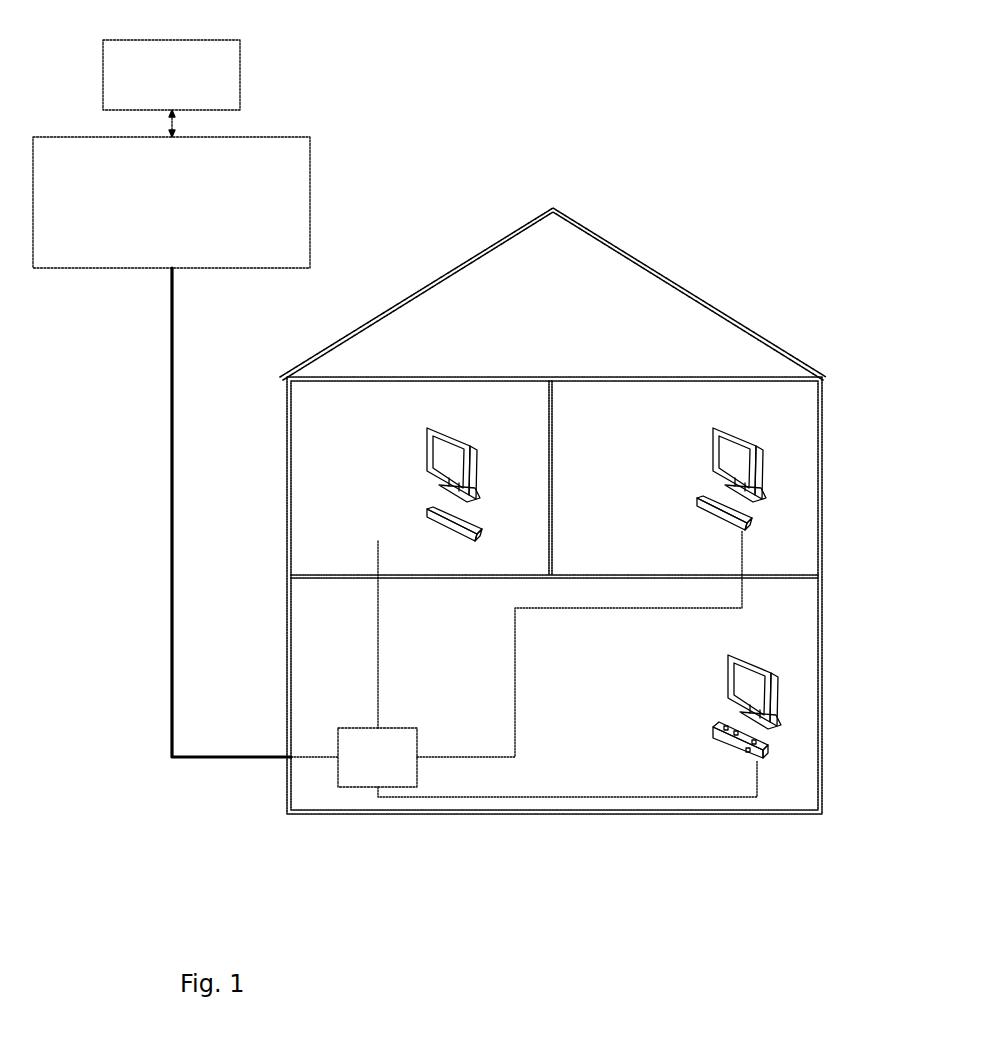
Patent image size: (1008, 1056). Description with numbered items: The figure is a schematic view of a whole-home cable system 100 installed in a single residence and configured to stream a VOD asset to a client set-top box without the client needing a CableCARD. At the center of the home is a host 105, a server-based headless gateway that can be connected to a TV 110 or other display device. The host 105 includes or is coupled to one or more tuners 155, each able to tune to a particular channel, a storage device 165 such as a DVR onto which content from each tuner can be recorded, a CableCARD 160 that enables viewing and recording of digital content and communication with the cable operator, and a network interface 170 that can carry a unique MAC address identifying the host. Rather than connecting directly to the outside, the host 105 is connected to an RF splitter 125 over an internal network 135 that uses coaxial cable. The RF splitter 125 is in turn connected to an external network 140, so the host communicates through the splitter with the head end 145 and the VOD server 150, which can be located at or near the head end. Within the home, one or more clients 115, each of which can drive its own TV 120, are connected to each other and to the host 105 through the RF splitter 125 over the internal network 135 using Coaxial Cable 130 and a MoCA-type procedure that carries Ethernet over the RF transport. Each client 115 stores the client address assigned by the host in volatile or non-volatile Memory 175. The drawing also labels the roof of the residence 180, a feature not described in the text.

The cable system 100 is at (393, 941).
The host 105 is at (760, 760).
The TV 110 is at (780, 685).
The client 115 is at (479, 525).
The TV 120 is at (447, 435).
The RF splitter 125 is at (357, 773).
The Coaxial Cable 130 is at (600, 800).
The internal network 135 is at (377, 682).
The external network 140 is at (170, 724).
The head end 145 is at (310, 185).
The VOD server 150 is at (233, 62).
The tuner 155 is at (768, 750).
The CableCARD 160 is at (747, 755).
The storage device 165 is at (721, 738).
The network interface 170 is at (733, 748).
The Memory 175 is at (730, 500).
The roof 180 is at (745, 327).